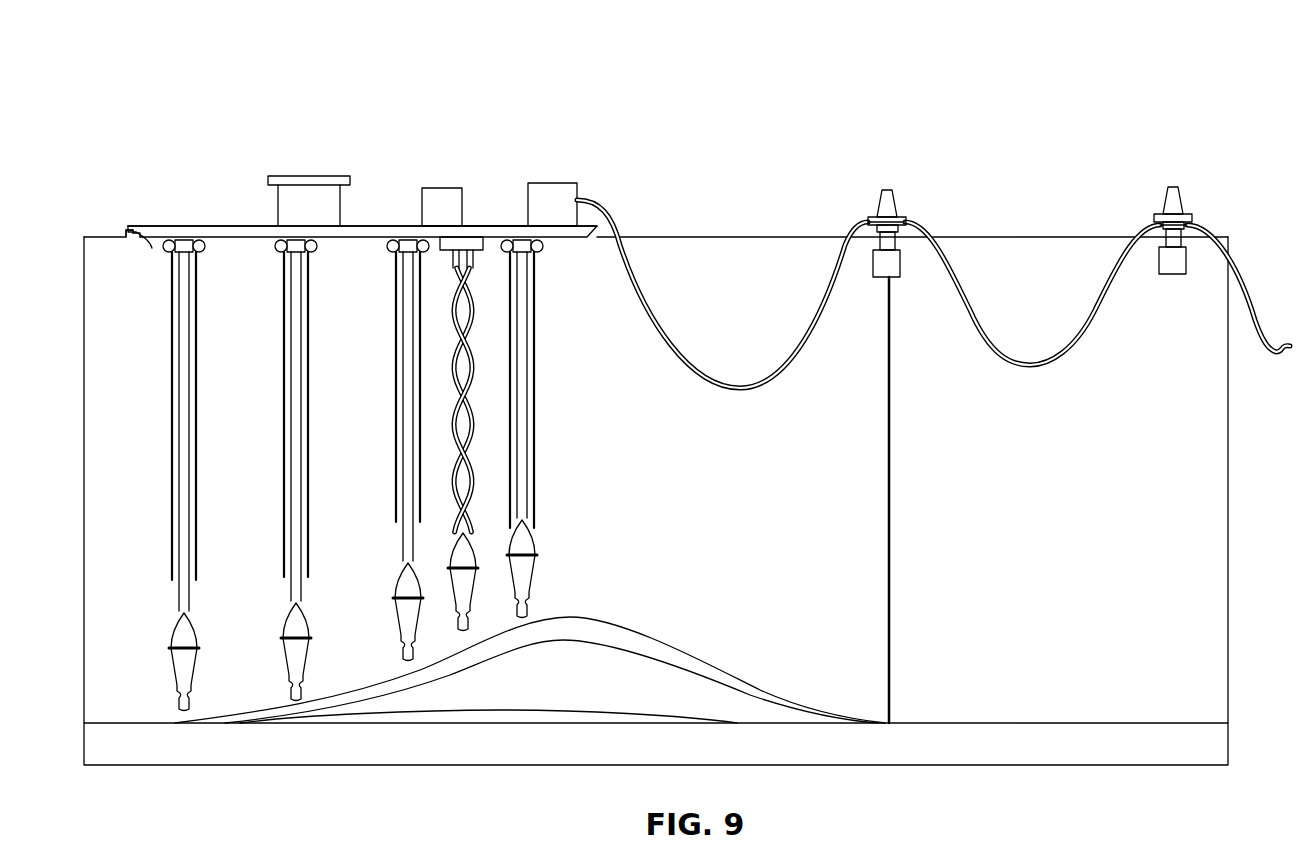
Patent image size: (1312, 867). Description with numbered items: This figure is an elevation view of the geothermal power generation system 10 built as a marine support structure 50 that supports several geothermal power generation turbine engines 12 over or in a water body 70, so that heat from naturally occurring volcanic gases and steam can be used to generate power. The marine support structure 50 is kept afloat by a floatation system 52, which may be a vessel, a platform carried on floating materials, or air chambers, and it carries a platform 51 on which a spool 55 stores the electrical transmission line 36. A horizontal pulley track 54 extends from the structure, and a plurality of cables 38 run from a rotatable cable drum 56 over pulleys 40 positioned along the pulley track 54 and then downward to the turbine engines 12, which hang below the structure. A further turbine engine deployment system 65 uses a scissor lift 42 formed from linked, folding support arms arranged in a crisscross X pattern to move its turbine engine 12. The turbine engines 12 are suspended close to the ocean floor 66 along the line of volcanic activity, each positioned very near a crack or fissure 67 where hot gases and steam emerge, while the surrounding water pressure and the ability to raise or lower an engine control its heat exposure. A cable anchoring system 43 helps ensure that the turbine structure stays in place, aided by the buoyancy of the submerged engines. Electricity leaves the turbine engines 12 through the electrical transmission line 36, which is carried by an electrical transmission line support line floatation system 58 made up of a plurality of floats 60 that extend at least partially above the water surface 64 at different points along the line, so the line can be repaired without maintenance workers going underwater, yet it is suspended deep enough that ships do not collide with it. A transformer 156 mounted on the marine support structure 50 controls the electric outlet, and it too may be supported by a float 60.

The geothermal power generation system 10 is at (955, 98).
The geothermal power generation turbine engine 12 is at (176, 675).
The electrical transmission line 36 is at (703, 394).
The cables 38 is at (172, 515).
The pulleys 40 is at (165, 250).
The scissor lift 42 is at (470, 312).
The cable anchoring system 43 is at (938, 557).
The marine support structure 50 is at (467, 99).
The platform 51 is at (187, 226).
The floatation system 52 is at (126, 232).
The pulley track 54 is at (148, 247).
The spool 55 is at (556, 183).
The rotatable cable drum 56 is at (448, 188).
The electrical transmission line support line floatation system 58 is at (836, 168).
The floats 60 is at (894, 200).
The water surface 64 is at (757, 234).
The turbine engine deployment system 65 is at (477, 218).
The ocean floor 66 is at (1006, 720).
The crack or fissure 67 is at (385, 688).
The water body 70 is at (813, 617).
The transformer 156 is at (302, 196).